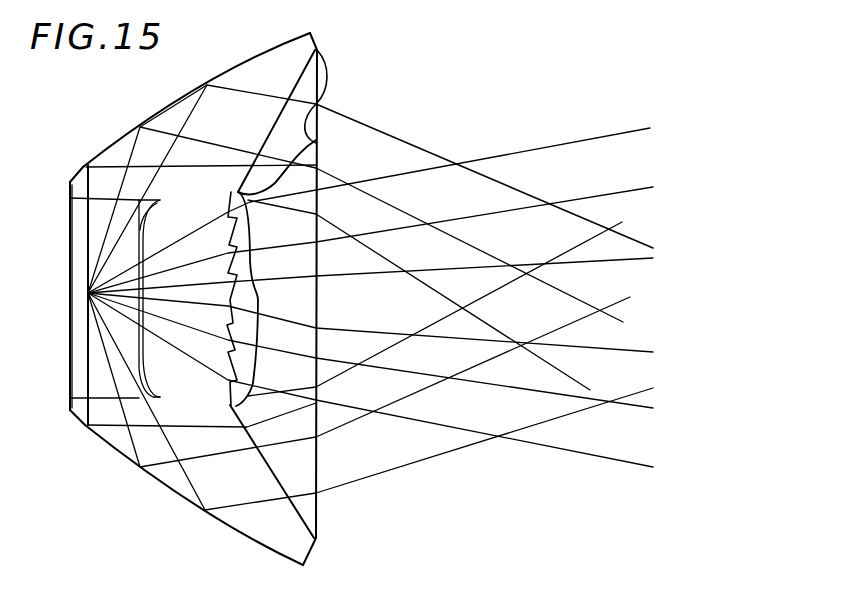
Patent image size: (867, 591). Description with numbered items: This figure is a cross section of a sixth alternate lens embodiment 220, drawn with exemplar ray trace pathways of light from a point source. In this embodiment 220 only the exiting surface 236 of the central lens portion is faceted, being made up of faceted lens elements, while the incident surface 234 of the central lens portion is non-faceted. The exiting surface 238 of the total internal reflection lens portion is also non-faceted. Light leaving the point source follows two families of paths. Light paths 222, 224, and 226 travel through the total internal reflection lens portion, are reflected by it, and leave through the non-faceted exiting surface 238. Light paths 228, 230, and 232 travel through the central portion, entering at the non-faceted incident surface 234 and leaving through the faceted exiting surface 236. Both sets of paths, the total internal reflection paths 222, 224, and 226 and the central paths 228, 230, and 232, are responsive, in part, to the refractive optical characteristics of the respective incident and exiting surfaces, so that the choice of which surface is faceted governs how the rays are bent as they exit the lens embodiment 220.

The sixth alternate embodiment 220 is at (332, 50).
The light path 222 is at (108, 163).
The light path 224 is at (233, 140).
The light path 226 is at (240, 87).
The light path 228 is at (363, 328).
The light path 230 is at (340, 355).
The light path 232 is at (345, 411).
The incident surface of the central lens portion 234 is at (137, 362).
The exiting surface of the central lens portion 236 is at (257, 299).
The exiting surface of the total internal reflection lens portion 238 is at (316, 142).